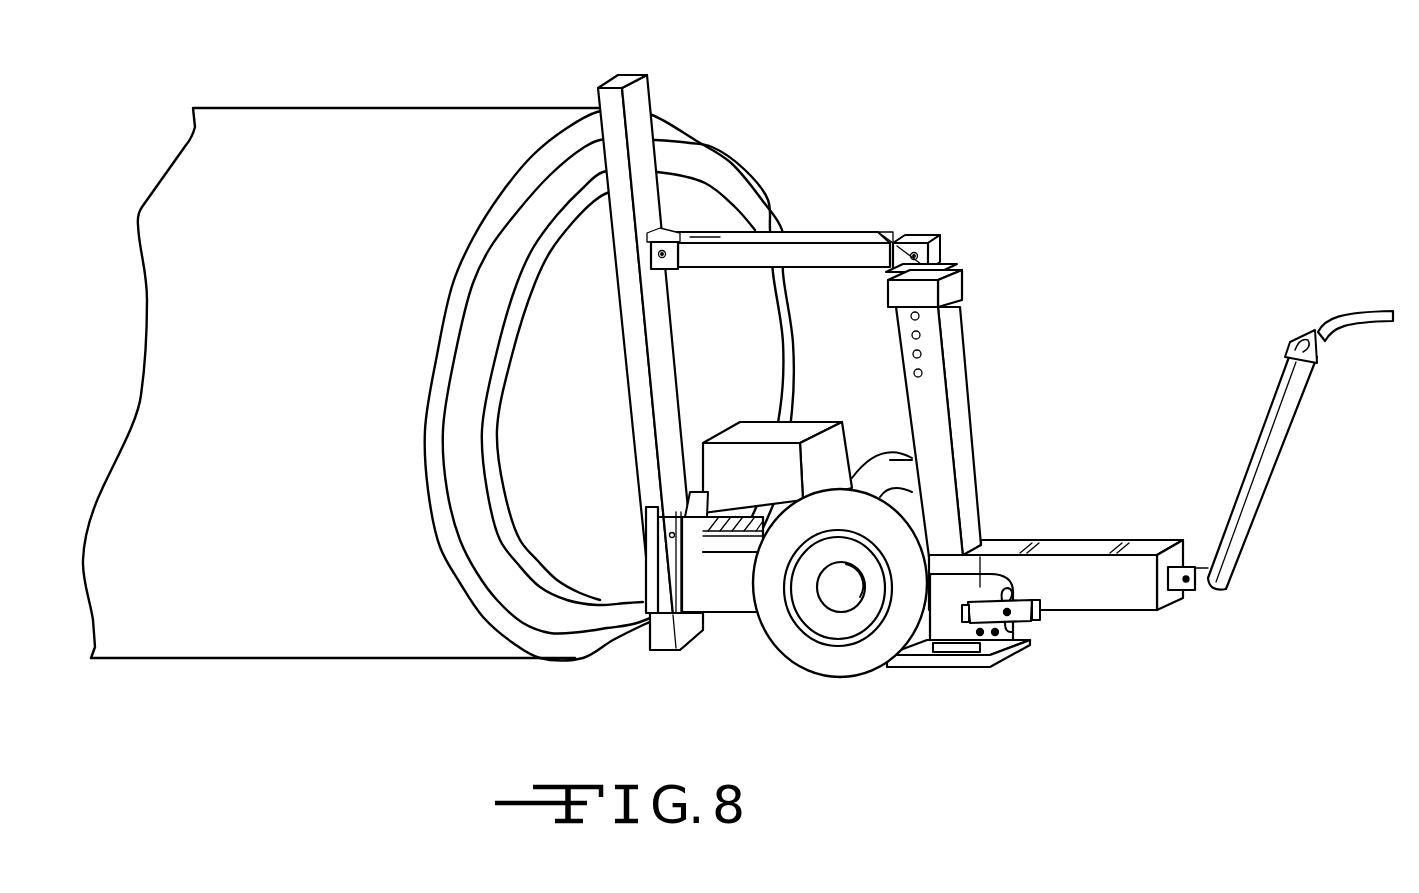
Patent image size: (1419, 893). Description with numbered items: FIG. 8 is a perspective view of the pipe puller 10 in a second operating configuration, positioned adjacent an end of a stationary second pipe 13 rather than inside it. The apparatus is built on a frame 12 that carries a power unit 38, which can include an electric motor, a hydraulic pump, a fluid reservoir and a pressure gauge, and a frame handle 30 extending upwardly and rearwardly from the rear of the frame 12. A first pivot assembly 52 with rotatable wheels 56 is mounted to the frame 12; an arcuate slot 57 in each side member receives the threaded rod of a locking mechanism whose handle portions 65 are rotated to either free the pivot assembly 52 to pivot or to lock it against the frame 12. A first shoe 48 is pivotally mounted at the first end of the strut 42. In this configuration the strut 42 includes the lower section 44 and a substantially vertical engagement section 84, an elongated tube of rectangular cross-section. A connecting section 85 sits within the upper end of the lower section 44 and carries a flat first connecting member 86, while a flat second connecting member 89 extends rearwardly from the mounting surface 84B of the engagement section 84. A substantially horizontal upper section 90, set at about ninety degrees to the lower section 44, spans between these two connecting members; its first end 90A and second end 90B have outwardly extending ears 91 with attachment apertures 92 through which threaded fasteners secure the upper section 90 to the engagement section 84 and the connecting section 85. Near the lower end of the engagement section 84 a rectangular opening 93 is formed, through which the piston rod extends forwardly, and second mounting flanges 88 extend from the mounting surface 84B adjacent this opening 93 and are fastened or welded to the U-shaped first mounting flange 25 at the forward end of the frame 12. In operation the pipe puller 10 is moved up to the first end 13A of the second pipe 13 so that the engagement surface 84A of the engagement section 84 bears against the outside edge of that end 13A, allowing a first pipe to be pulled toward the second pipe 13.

The pipe puller 10 is at (955, 387).
The frame 12 is at (1148, 612).
The second pipe 13 is at (329, 97).
The first end of second pipe 13A is at (583, 622).
The first mounting flange 25 is at (692, 638).
The frame handle 30 is at (1273, 422).
The power unit 38 is at (810, 420).
The strut 42 is at (779, 217).
The lower section 44 is at (957, 388).
The first shoe 48 is at (992, 667).
The first pivot assembly 52 is at (983, 585).
The rotatable wheels 56 is at (838, 672).
The arcuate slot 57 is at (1012, 603).
The handle portions 65 is at (1037, 614).
The engagement section 84 is at (627, 328).
The engagement surface 84A is at (598, 86).
The mounting surface 84B is at (635, 97).
The connecting section 85 is at (958, 266).
The first connecting member 86 is at (943, 258).
The second mounting flanges 88 is at (662, 652).
The second connecting member 89 is at (658, 232).
The horizontal upper section 90 is at (806, 232).
The first end of upper section 90A is at (886, 231).
The second end of upper section 90B is at (715, 231).
The ears 91 is at (655, 250).
The attachment apertures 92 is at (668, 262).
The opening 93 is at (665, 548).